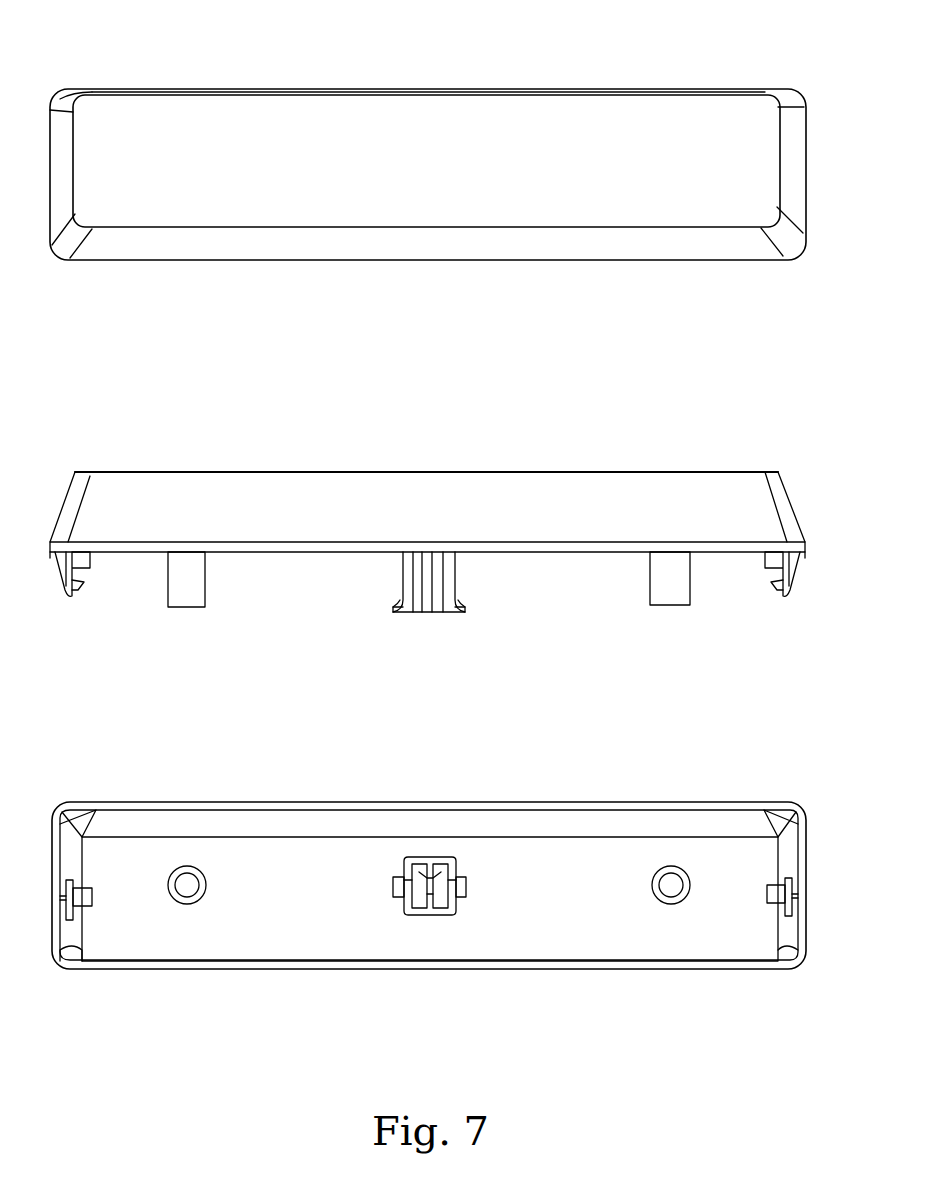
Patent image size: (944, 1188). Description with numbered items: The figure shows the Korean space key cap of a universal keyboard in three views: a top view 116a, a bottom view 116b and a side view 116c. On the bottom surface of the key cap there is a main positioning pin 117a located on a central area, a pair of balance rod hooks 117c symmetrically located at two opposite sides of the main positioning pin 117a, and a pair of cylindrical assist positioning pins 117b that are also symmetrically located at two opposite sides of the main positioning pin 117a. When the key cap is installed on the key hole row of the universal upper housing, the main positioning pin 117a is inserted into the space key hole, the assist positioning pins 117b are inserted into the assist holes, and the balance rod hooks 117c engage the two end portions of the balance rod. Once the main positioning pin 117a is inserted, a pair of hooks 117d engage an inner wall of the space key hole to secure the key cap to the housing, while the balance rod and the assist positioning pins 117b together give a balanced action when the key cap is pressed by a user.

The top view 116a is at (778, 92).
The bottom view 116b is at (775, 497).
The side view 116c is at (792, 932).
The main positioning pin 117a is at (428, 857).
The assist positioning pins 117b is at (185, 866).
The balance rod hooks 117c is at (63, 867).
The hooks 117d is at (400, 887).